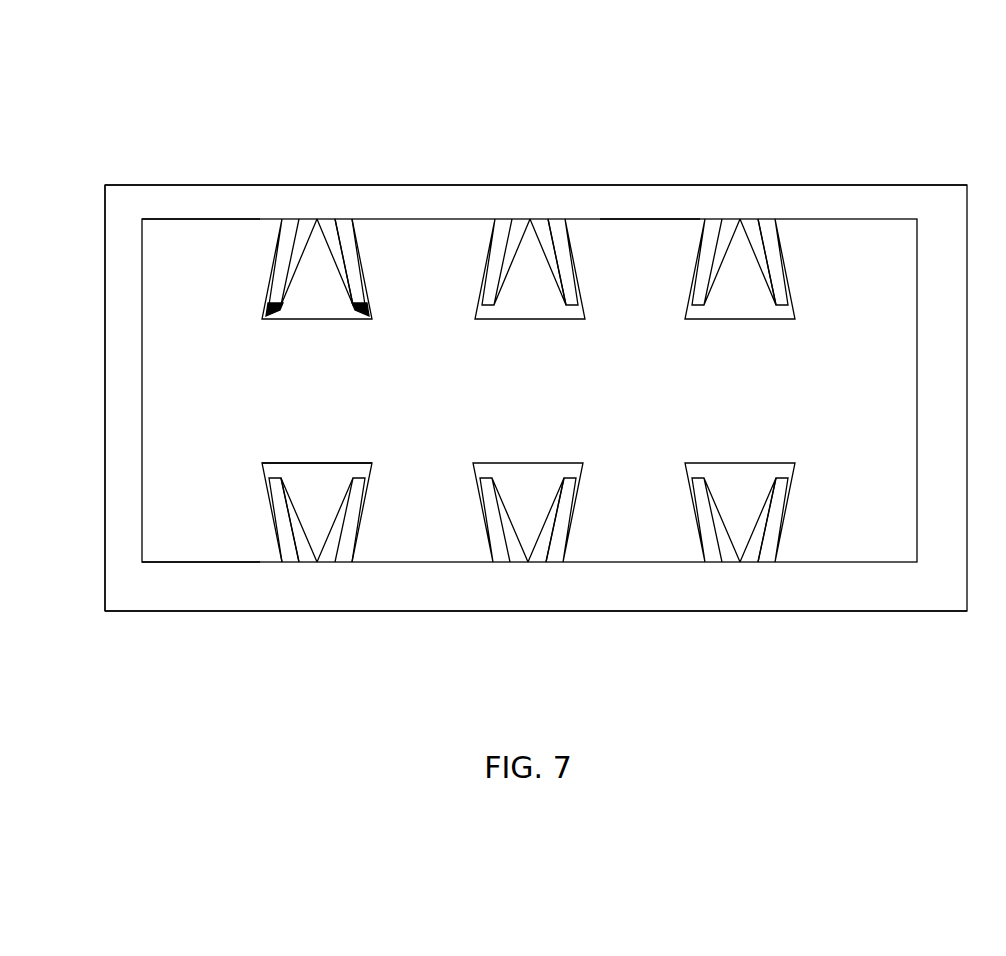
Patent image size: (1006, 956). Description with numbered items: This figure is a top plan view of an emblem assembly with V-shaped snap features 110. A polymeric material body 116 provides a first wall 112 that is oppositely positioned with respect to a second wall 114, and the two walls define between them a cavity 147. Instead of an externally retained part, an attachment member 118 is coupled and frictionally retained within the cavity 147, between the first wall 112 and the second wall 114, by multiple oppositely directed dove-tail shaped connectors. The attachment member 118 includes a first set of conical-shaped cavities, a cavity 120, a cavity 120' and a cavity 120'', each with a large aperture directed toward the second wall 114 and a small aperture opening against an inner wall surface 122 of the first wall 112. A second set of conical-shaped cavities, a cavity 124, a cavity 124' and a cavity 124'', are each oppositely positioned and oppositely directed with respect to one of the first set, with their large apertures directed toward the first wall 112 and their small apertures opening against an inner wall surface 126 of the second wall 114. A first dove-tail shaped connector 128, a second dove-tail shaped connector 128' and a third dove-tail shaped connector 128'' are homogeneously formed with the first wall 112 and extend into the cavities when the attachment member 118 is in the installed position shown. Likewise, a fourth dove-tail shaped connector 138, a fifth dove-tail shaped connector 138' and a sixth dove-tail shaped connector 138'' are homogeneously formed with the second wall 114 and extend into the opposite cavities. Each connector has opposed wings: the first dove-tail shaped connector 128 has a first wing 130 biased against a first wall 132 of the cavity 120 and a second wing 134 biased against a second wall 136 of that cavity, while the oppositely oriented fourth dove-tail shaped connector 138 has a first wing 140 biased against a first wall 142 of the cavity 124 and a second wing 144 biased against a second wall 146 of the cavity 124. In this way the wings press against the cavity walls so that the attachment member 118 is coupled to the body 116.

The emblem assembly with V-shaped snap features 110 is at (744, 143).
The first wall 112 is at (738, 595).
The second wall 114 is at (290, 197).
The polymeric material body 116 is at (128, 376).
The attachment member 118 is at (641, 407).
The cavity 120 is at (359, 501).
The cavity 120' is at (528, 512).
The cavity 120'' is at (740, 512).
The inner wall surface 122 is at (212, 560).
The cavity 124 is at (363, 281).
The cavity 124' is at (530, 269).
The cavity 124'' is at (740, 269).
The inner wall surface 126 is at (199, 224).
The first dove-tail shaped connector 128 is at (303, 545).
The second dove-tail shaped connector 128' is at (600, 538).
The third dove-tail shaped connector 128'' is at (816, 538).
The first wing 130 is at (295, 525).
The first wall of the cavity 132 is at (270, 465).
The second wing 134 is at (343, 525).
The second wall of the cavity 136 is at (363, 465).
The fourth dove-tail shaped connector 138 is at (382, 262).
The fifth dove-tail shaped connector 138' is at (596, 262).
The sixth dove-tail shaped connector 138'' is at (809, 262).
The first wing 140 is at (283, 241).
The first wall of the cavity 142 is at (281, 313).
The second wing 144 is at (355, 241).
The second wall of the cavity 146 is at (348, 312).
The cavity 147 is at (658, 216).